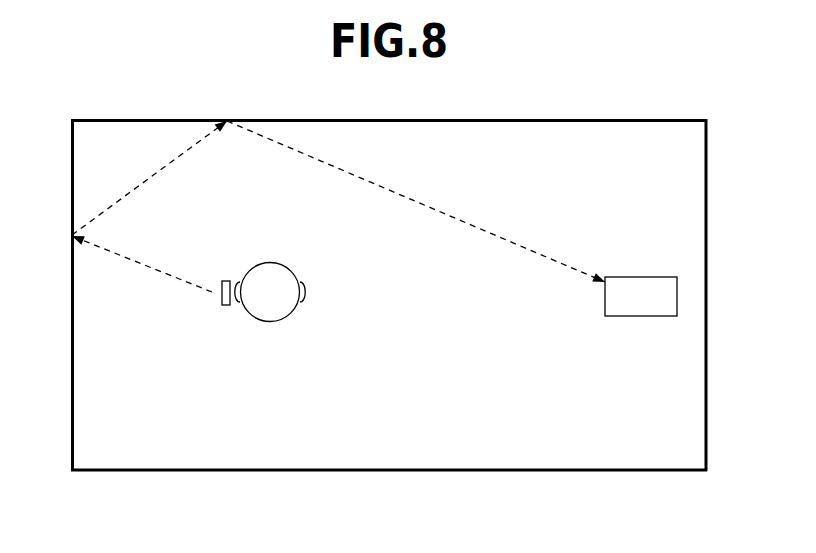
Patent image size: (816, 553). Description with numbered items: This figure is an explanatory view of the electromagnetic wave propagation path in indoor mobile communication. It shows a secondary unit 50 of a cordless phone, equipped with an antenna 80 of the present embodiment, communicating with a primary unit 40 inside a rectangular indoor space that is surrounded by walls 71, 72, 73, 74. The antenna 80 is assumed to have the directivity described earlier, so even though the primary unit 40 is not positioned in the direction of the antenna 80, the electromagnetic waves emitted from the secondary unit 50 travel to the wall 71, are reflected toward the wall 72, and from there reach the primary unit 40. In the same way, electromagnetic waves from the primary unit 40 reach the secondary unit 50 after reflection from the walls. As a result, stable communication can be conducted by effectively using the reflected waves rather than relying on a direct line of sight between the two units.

The primary unit 40 is at (635, 317).
The secondary unit 50 is at (268, 322).
The wall 71 is at (71, 302).
The wall 72 is at (510, 119).
The wall 73 is at (707, 271).
The wall 74 is at (510, 471).
The antenna 80 is at (225, 280).